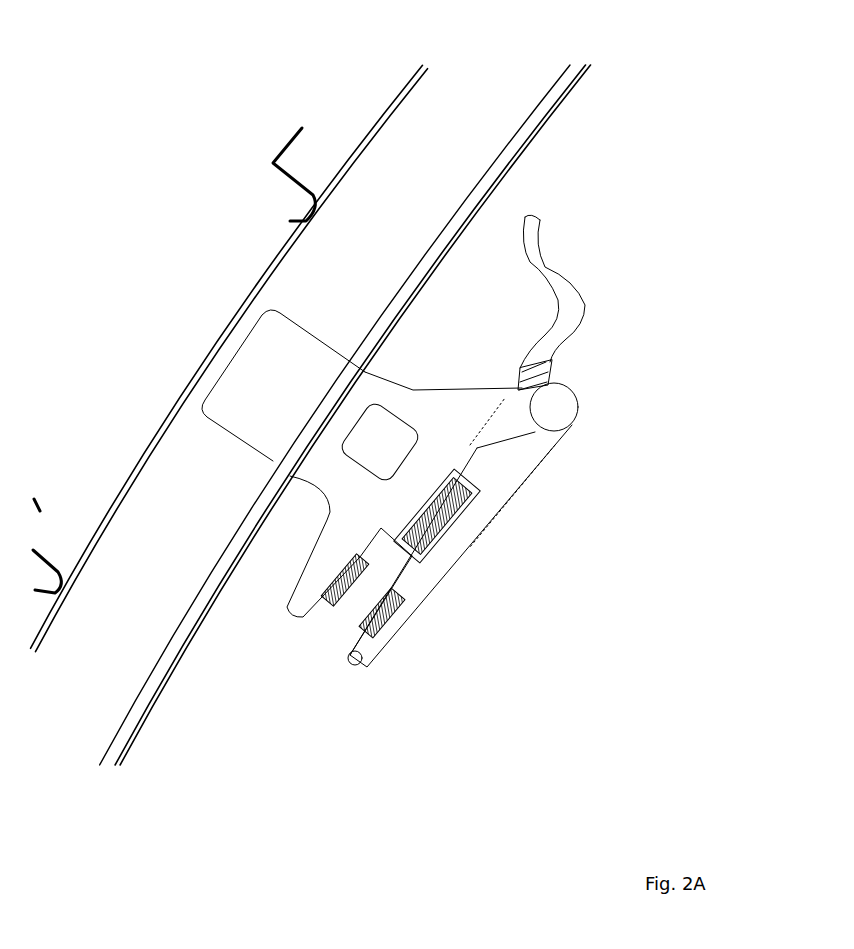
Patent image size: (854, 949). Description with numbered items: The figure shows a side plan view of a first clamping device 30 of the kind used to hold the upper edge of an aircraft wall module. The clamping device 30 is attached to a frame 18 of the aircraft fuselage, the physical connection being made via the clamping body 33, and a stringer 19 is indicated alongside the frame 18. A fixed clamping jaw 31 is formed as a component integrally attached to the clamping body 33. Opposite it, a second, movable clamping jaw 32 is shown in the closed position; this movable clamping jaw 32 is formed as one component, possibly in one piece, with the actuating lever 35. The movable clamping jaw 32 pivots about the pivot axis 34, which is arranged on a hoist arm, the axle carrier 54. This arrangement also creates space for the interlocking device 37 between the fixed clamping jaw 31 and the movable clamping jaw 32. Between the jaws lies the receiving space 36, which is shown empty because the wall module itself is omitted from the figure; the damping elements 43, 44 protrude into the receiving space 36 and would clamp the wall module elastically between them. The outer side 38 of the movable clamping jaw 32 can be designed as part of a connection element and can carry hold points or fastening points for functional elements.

The frame 18 is at (389, 200).
The stringer 19 is at (272, 135).
The first clamping device 30 is at (412, 433).
The fixed clamping jaw 31 is at (338, 550).
The movable clamping jaw 32 is at (500, 502).
The clamping body 33 is at (308, 373).
The pivot axis 34 is at (548, 407).
The actuating lever 35 is at (565, 297).
The receiving space 36 is at (390, 565).
The interlocking device 37 is at (452, 533).
The outer side of the movable clamping jaw 38 is at (503, 533).
The damping element 43 is at (317, 612).
The damping element 44 is at (363, 637).
The axle carrier 54 is at (490, 420).